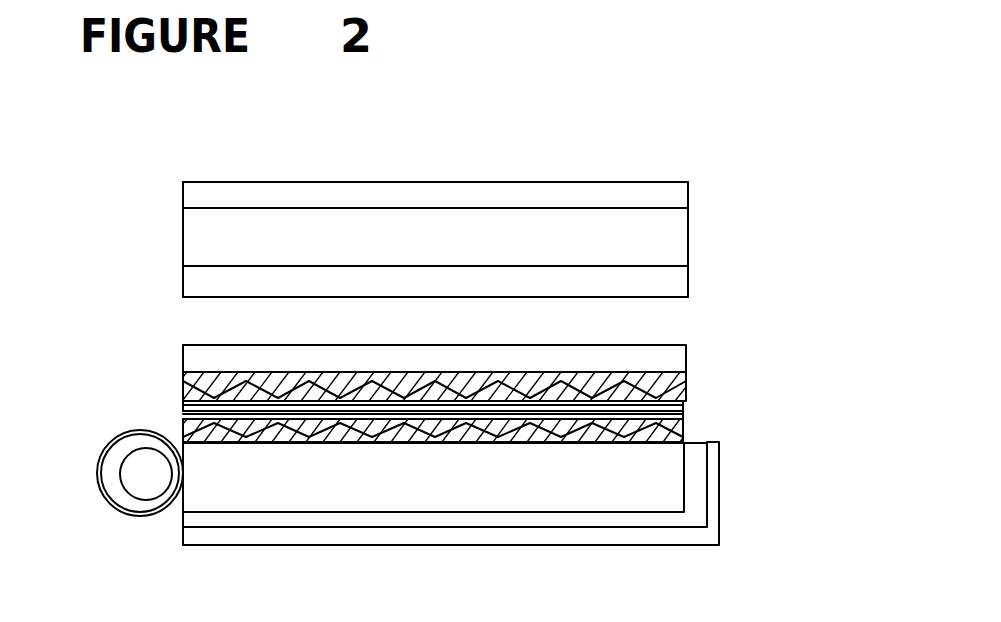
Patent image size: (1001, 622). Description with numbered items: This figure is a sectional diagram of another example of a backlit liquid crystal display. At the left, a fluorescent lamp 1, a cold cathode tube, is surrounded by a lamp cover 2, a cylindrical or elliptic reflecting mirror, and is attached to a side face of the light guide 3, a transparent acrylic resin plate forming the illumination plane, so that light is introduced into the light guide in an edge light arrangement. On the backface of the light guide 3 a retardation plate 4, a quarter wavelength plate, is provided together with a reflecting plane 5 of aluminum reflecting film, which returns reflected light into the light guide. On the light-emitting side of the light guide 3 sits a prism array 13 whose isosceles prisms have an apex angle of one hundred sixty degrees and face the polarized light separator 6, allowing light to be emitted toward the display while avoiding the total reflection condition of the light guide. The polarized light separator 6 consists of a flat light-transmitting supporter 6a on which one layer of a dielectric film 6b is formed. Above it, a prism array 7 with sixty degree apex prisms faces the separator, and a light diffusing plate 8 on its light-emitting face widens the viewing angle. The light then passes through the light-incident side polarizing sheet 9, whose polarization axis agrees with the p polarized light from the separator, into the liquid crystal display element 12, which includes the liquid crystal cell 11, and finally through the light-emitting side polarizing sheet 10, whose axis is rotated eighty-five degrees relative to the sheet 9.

The fluorescent lamp 1 is at (130, 470).
The lamp cover 2 is at (133, 526).
The light guide 3 is at (665, 482).
The retardation plate 4 is at (630, 520).
The reflecting plane 5 is at (230, 525).
The polarized light separator 6 is at (692, 416).
The flat light-transmitting supporter 6a is at (183, 405).
The dielectric film 6b is at (183, 400).
The prism array 7 is at (683, 388).
The light diffusing plate 8 is at (675, 362).
The light-incident side polarizing sheet 9 is at (680, 283).
The light-emitting side polarizing sheet 10 is at (680, 195).
The liquid crystal cell 11 is at (670, 238).
The liquid crystal display element 12 is at (180, 243).
The prism array 13 is at (688, 432).